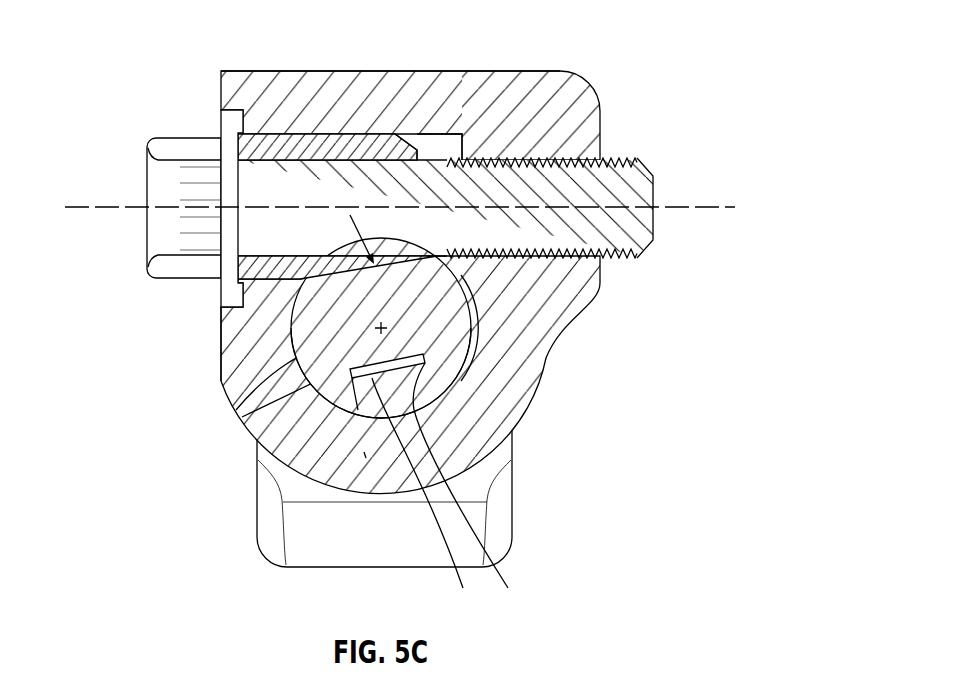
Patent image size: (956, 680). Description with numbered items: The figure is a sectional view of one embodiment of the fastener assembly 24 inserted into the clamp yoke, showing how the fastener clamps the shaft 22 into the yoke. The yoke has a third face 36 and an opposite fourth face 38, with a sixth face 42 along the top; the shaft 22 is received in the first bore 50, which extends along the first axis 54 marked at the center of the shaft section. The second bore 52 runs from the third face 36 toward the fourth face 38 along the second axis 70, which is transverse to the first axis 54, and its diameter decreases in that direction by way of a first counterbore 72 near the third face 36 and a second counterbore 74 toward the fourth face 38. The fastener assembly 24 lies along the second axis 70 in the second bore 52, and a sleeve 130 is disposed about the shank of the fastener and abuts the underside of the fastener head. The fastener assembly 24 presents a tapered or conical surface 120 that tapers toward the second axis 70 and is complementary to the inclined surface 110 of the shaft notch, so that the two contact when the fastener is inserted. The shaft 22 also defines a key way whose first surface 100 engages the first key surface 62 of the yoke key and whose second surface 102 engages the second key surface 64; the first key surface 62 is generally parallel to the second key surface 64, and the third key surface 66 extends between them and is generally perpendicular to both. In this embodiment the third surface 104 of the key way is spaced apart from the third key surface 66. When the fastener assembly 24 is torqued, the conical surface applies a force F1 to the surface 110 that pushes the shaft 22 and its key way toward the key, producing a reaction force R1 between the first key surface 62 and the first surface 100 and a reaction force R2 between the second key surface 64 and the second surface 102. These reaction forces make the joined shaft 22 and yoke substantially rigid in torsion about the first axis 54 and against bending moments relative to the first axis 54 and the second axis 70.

The fastener assembly 24 is at (148, 128).
The first counterbore 72 is at (222, 111).
The sixth face 42 is at (282, 70).
The sleeve 130 is at (315, 146).
The second bore 52 is at (400, 134).
The second counterbore 74 is at (443, 134).
The fourth face 38 is at (601, 124).
The second axis 70 is at (700, 203).
The third face 36 is at (221, 318).
The tapered or conical surface 120 is at (347, 262).
The force F1 is at (372, 258).
The surface 110 is at (304, 285).
The first axis 54 is at (385, 327).
The first bore 50 is at (475, 313).
The shaft 22 is at (453, 333).
The first surface 100 is at (425, 357).
The reaction force R1 is at (359, 418).
The reaction force R2 is at (441, 400).
The third surface 104 is at (238, 412).
The second surface 102 is at (257, 447).
The second key surface 64 is at (366, 458).
The third key surface 66 is at (426, 500).
The first key surface 62 is at (470, 515).